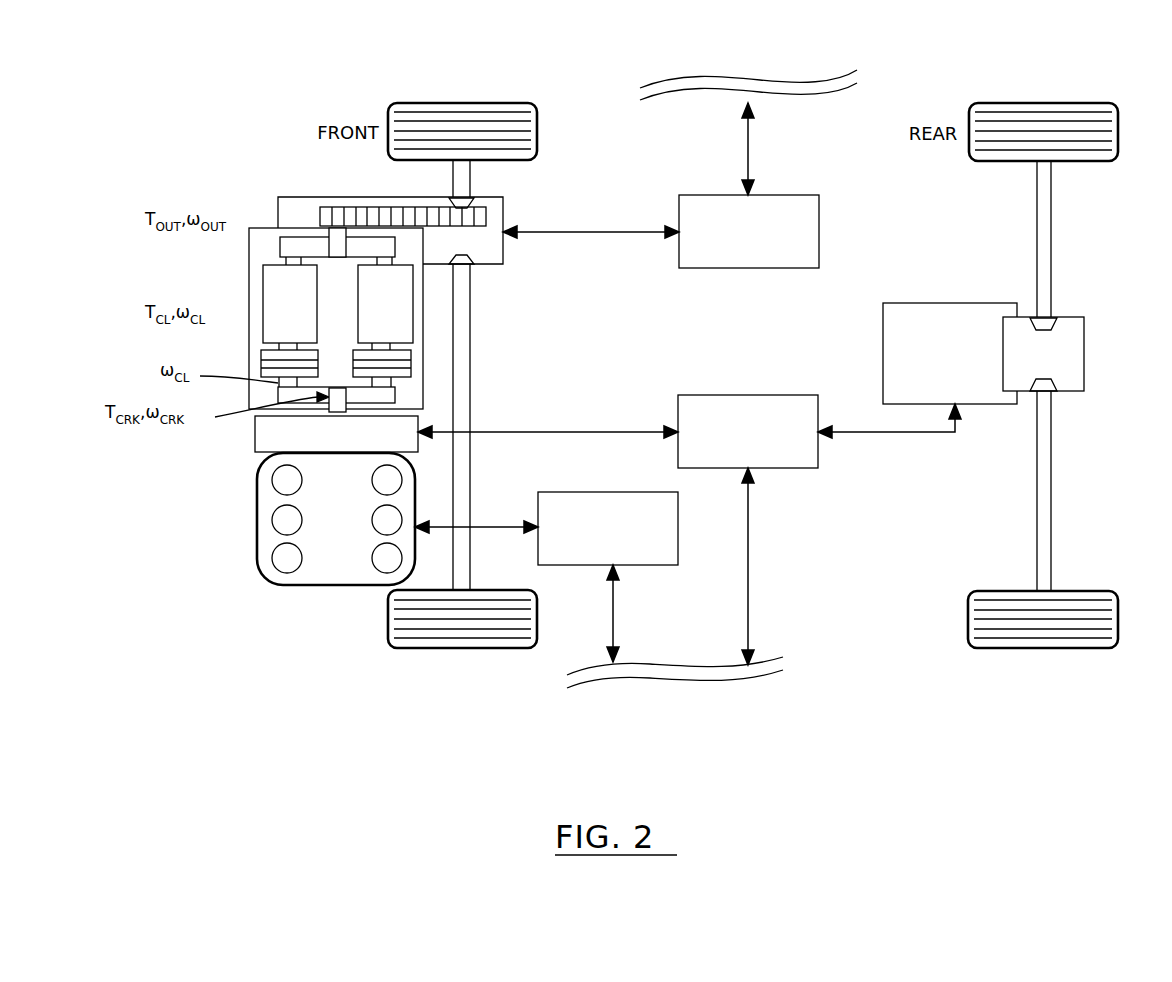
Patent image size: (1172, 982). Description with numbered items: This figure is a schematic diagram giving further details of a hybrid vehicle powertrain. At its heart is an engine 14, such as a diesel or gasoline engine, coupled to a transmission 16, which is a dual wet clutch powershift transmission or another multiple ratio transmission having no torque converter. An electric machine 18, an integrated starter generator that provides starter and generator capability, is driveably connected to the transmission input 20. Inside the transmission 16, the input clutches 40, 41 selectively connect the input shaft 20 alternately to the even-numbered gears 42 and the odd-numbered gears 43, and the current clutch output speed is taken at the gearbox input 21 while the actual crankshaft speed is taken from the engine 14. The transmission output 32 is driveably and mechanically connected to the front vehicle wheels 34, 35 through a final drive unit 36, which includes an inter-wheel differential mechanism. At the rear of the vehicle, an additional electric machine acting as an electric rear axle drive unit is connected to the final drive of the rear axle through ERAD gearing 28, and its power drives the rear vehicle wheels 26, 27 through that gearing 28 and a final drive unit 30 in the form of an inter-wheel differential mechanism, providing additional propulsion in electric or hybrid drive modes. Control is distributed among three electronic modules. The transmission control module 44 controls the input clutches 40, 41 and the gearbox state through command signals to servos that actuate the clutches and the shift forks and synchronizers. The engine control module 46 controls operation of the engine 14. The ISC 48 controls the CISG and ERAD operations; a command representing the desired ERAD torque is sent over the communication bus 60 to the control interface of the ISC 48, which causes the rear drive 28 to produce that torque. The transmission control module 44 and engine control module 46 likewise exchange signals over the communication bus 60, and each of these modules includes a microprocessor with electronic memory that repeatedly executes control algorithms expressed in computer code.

The engine 14 is at (340, 585).
The transmission 16 is at (258, 273).
The electric machine 18 is at (797, 468).
The transmission input 20 is at (346, 397).
The gearbox input 21 is at (360, 385).
The vehicle wheel 26 is at (1086, 103).
The vehicle wheel 27 is at (1085, 648).
The ERAD gearing 28 is at (948, 303).
The final drive unit 30 is at (1085, 345).
The transmission output 32 is at (333, 243).
The vehicle wheel 34 is at (436, 103).
The vehicle wheel 35 is at (446, 648).
The final drive unit 36 is at (505, 215).
The input clutch 40 is at (412, 360).
The input clutch 41 is at (262, 362).
The even-numbered gears 42 is at (413, 281).
The odd-numbered gears 43 is at (274, 264).
The transmission control module 44 is at (805, 195).
The engine control module 46 is at (657, 565).
The ISC 48 is at (255, 433).
The communication bus 60 is at (773, 90).